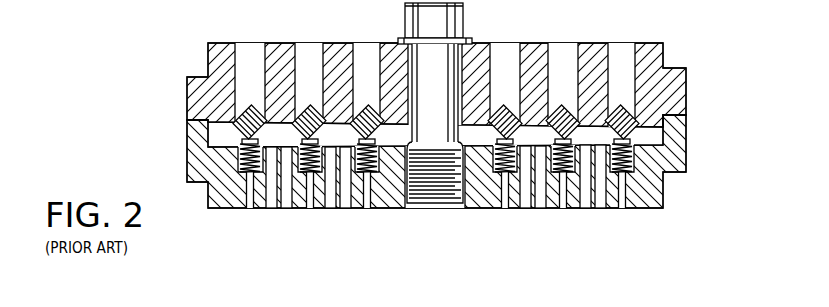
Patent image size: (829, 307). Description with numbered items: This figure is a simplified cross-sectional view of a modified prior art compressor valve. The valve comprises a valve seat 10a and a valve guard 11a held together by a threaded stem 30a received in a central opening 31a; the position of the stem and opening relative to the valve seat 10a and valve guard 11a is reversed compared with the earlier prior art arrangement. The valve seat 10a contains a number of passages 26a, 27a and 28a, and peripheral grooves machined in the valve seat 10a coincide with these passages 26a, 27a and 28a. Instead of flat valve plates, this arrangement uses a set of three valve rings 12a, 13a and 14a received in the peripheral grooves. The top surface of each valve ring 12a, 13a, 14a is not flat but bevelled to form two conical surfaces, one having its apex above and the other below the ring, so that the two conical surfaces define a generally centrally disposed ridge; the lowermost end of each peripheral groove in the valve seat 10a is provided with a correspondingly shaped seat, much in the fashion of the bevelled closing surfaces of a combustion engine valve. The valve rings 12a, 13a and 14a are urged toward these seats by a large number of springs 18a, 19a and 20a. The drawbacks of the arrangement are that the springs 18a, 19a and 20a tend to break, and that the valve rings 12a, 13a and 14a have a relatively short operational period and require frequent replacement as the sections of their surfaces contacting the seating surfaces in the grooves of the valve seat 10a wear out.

The valve seat 10a is at (668, 93).
The valve guard 11a is at (672, 143).
The valve ring 12a is at (234, 133).
The valve ring 13a is at (316, 107).
The valve ring 14a is at (376, 107).
The spring 18a is at (256, 172).
The spring 19a is at (310, 172).
The spring 20a is at (497, 170).
The passage 26a is at (243, 43).
The passage 27a is at (303, 43).
The passage 28a is at (362, 43).
The threaded stem 30a is at (447, 128).
The central opening 31a is at (416, 212).